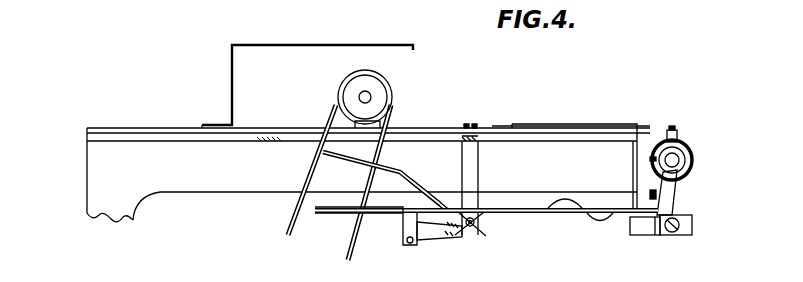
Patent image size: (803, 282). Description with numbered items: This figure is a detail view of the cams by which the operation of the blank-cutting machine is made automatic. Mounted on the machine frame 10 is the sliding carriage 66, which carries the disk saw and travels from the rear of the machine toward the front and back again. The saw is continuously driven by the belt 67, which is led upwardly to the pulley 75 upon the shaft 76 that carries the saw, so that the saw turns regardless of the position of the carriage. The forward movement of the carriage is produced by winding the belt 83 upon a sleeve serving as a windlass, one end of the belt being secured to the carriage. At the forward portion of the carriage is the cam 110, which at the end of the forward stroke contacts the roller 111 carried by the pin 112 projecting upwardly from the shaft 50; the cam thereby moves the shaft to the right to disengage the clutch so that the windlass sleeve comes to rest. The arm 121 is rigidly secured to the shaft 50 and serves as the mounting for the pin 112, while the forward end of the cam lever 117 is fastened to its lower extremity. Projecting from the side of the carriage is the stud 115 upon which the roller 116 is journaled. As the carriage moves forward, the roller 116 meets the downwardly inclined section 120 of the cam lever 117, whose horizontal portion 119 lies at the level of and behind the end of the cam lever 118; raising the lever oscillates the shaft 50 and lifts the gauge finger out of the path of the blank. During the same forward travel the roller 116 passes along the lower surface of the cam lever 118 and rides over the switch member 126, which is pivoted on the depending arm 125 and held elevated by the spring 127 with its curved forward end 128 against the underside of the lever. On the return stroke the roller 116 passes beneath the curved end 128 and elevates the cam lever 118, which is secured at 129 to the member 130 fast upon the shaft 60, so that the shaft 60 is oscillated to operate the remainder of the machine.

The machine frame 10 is at (217, 185).
The belt 67 is at (232, 54).
The pulley 75 is at (375, 84).
The shaft 76 is at (371, 97).
The sliding carriage 66 is at (388, 122).
The horizontal portion 119 is at (385, 170).
The downwardly inclined section 120 is at (423, 197).
The cam 110 is at (513, 128).
The belt 83 is at (600, 132).
The pin 112 is at (674, 128).
The roller 111 is at (678, 145).
The shaft 50 is at (688, 155).
The arm 121 is at (675, 188).
The shaft 60 is at (680, 235).
The securing point 129 is at (638, 220).
The member 130 is at (660, 237).
The cam lever 117 is at (550, 208).
The cam lever 118 is at (543, 213).
The depending arm 125 is at (404, 219).
The switch member 126 is at (450, 244).
The spring 127 is at (458, 222).
The curved forward end 128 is at (478, 224).
The stud 115 is at (480, 230).
The roller 116 is at (478, 237).